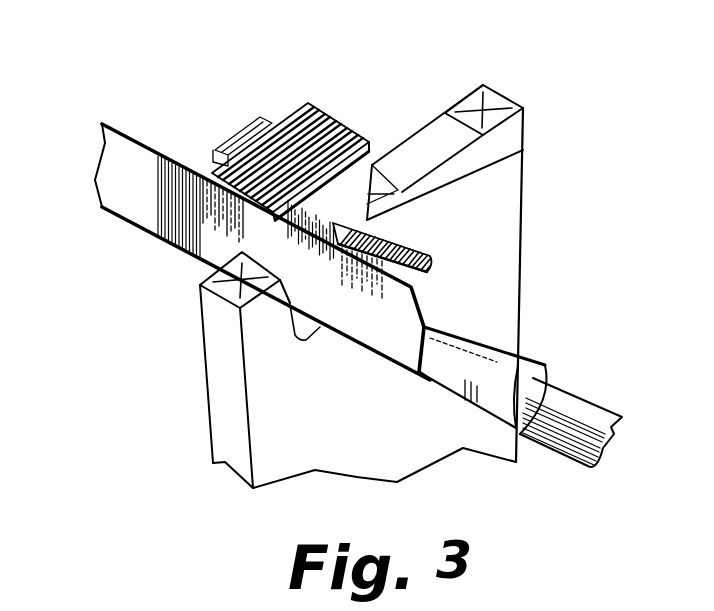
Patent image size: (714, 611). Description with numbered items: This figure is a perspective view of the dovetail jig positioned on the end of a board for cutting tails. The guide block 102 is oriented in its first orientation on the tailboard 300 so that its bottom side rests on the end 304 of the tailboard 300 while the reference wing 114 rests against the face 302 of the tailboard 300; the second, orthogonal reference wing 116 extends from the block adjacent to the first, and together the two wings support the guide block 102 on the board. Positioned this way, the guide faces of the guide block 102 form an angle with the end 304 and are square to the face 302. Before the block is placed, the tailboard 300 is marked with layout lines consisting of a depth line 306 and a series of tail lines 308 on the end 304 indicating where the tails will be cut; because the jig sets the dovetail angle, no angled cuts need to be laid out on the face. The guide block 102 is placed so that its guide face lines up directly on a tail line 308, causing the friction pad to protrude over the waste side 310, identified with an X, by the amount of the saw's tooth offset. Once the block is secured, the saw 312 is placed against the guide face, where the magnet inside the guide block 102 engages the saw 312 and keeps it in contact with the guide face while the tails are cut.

The guide block 102 is at (332, 114).
The reference wing 114 is at (308, 338).
The reference wing 116 is at (427, 264).
The tailboard 300 is at (488, 328).
The face 302 is at (382, 434).
The end 304 is at (508, 90).
The depth line 306 is at (497, 174).
The tail lines 308 is at (453, 130).
The waste side 310 is at (215, 310).
The saw 312 is at (162, 213).